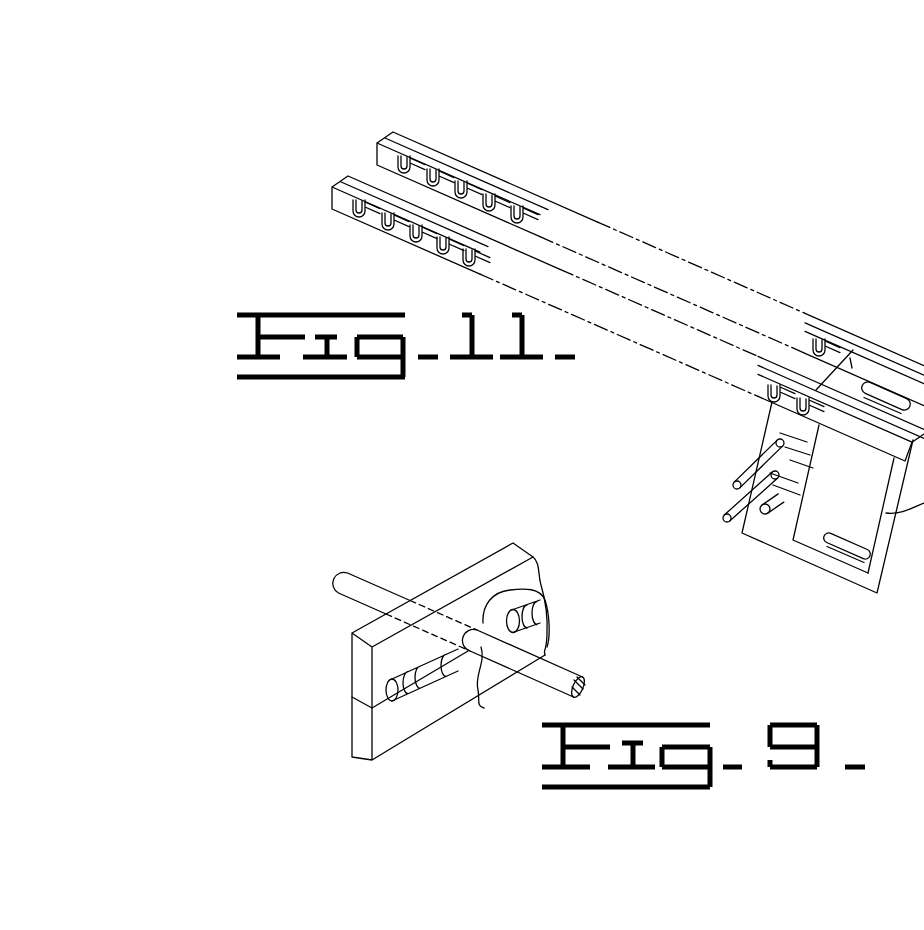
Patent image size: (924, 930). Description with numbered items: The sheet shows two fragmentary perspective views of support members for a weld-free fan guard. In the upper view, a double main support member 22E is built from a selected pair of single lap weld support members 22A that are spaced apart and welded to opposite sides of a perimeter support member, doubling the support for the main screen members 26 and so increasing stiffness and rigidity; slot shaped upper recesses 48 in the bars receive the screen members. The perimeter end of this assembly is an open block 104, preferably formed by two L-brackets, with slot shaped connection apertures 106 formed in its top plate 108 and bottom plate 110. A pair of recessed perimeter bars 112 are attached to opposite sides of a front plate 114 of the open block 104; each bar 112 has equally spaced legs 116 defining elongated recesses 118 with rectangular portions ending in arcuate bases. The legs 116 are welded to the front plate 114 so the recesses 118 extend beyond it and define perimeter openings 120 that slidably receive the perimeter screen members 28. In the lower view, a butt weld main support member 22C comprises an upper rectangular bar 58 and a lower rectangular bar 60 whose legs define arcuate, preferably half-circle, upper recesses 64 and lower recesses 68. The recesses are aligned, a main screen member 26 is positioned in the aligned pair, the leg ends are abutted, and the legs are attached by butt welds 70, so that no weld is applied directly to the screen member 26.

In FIG. 11, the lap weld support member 22A is at (370, 149).
In FIG. 11, the double main support member 22E is at (640, 231).
In FIG. 11, the upper recess 48 is at (804, 445).
In FIG. 11, the top plate 108 is at (860, 373).
In FIG. 11, the open block 104 is at (880, 378).
In FIG. 11, the connection aperture 106 is at (858, 545).
In FIG. 11, the elongated recess 118 is at (792, 524).
In FIG. 11, the front plate 114 is at (815, 485).
In FIG. 11, the bottom plate 110 is at (825, 553).
In FIG. 11, the leg 116 is at (795, 500).
In FIG. 11, the perimeter screen member 28 is at (747, 468).
In FIG. 11, the recessed perimeter bar 112 is at (730, 506).
In FIG. 11, the perimeter opening 120 is at (756, 508).
In FIG. 9, the butt weld main support member 22C is at (298, 679).
In FIG. 9, the upper rectangular bar 58 is at (453, 582).
In FIG. 9, the lower rectangular bar 60 is at (363, 748).
In FIG. 9, the main screen member 26 is at (367, 589).
In FIG. 9, the butt weld 70 is at (540, 610).
In FIG. 9, the upper recess 64 is at (503, 590).
In FIG. 9, the lower recess 68 is at (481, 697).